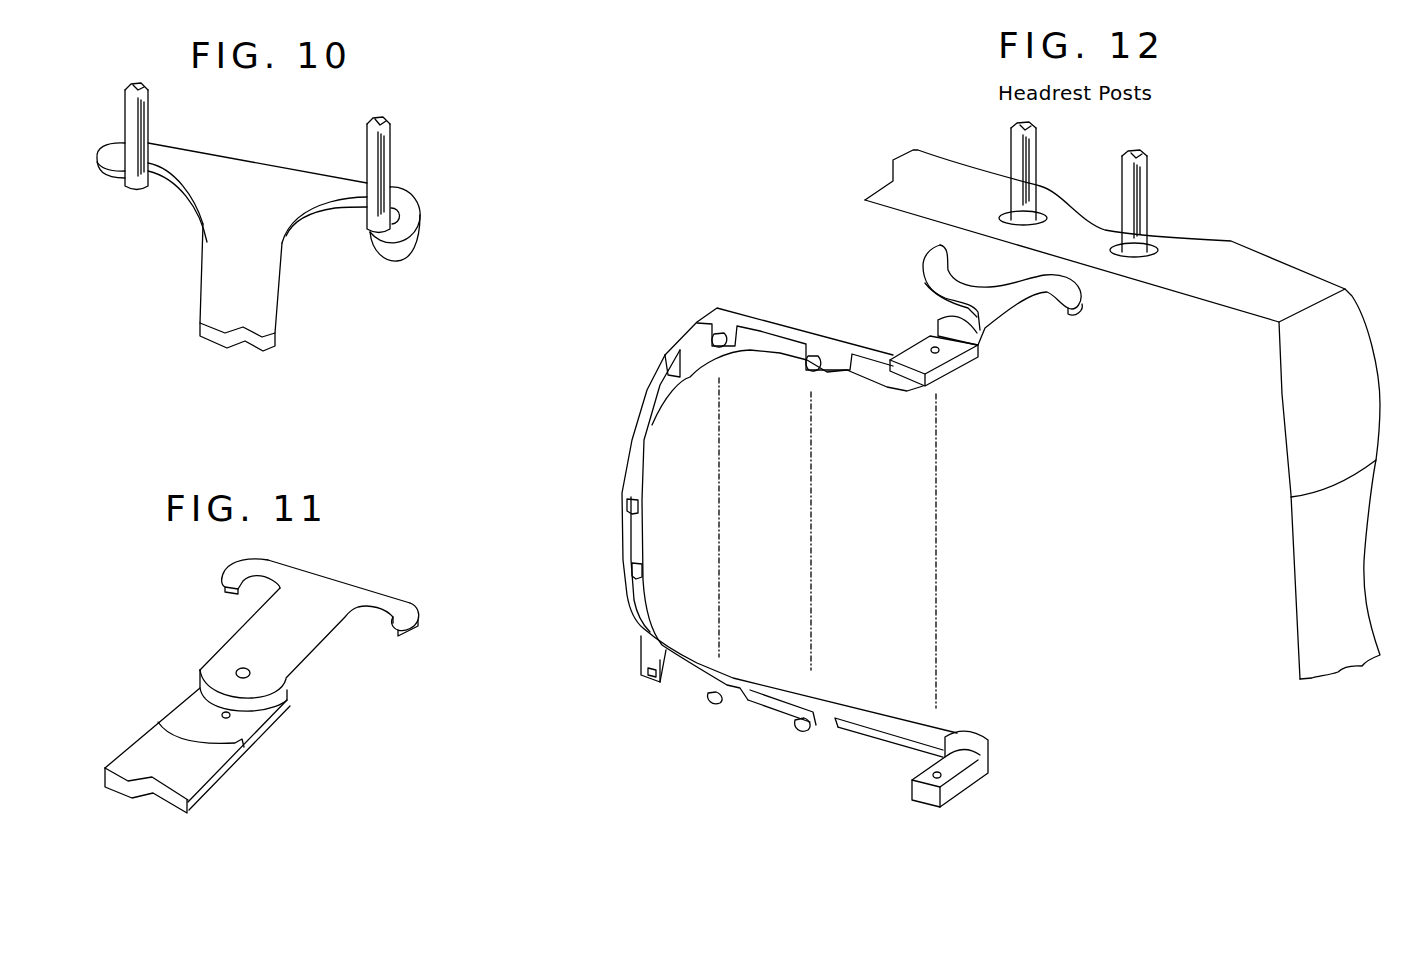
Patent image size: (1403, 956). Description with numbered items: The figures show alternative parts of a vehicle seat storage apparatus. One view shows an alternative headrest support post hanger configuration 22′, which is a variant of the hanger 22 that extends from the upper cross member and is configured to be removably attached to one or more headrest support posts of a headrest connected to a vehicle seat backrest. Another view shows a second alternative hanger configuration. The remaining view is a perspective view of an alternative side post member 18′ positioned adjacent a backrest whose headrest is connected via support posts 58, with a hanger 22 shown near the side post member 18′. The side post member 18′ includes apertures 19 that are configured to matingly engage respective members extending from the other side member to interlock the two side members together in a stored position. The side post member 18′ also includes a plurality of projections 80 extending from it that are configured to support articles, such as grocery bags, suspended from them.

In FIG. 10, the headrest support post hanger configuration 22′ is at (408, 214).
In FIG. 12, the headrest support post hanger 22 is at (1087, 300).
In FIG. 12, the side post member 18′ is at (670, 352).
In FIG. 12, the apertures 19 is at (623, 507).
In FIG. 12, the projections 80 is at (722, 343).
In FIG. 12, the support posts 58 is at (1028, 148).